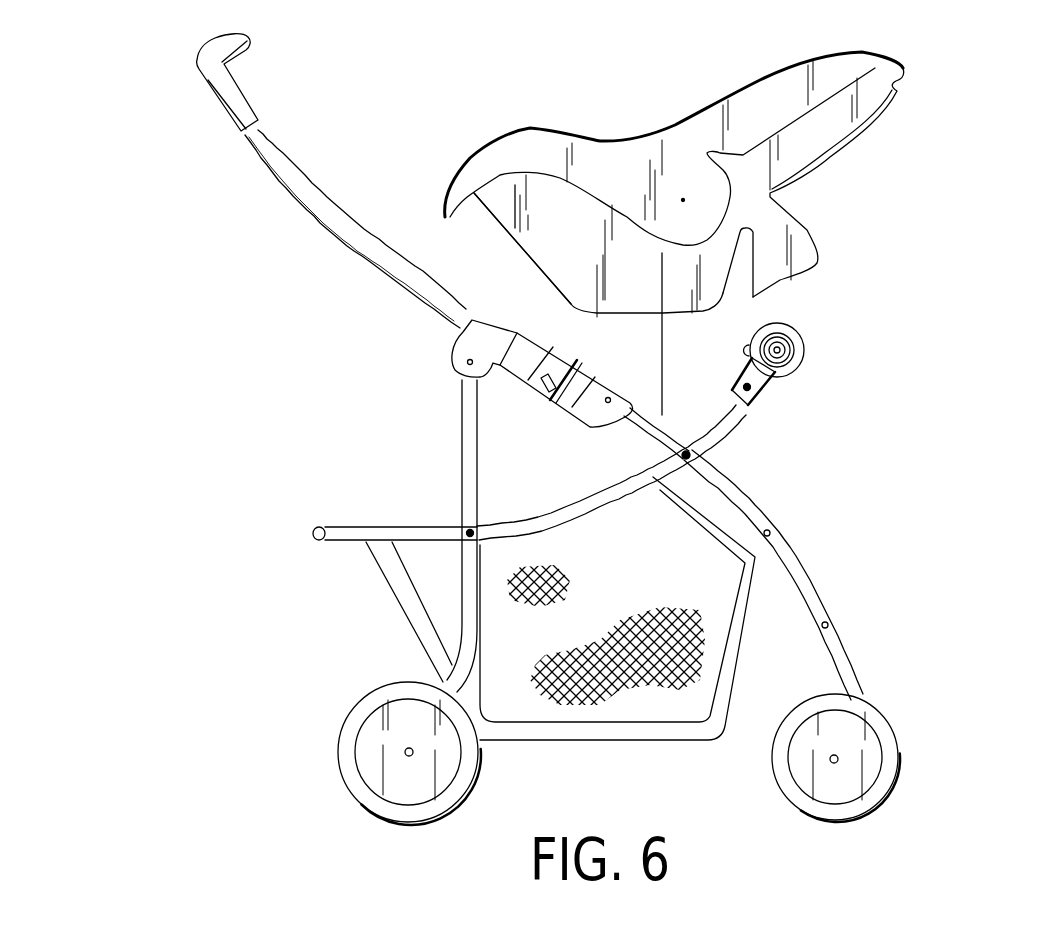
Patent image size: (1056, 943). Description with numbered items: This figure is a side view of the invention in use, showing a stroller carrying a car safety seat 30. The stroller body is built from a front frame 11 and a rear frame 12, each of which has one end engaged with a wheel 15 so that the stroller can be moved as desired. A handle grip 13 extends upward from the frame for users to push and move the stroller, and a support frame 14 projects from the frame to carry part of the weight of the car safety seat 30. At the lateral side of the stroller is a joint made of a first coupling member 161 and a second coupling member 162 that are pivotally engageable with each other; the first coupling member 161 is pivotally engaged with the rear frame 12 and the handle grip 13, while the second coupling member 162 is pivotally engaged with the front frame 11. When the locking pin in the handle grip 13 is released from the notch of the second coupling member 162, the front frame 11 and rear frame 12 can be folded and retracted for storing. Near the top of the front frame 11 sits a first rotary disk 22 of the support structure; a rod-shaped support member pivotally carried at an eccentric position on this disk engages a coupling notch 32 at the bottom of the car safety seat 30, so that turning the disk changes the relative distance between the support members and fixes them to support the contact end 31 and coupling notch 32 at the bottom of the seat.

The front frame 11 is at (760, 511).
The rear frame 12 is at (458, 618).
The handle grip 13 is at (215, 90).
The support frame 14 is at (328, 530).
The wheels 15 is at (888, 752).
The first rotary disk 22 is at (798, 340).
The car safety seat 30 is at (661, 219).
The contact end 31 is at (517, 230).
The coupling notch 32 is at (742, 238).
The first coupling member 161 is at (462, 334).
The second coupling member 162 is at (550, 405).